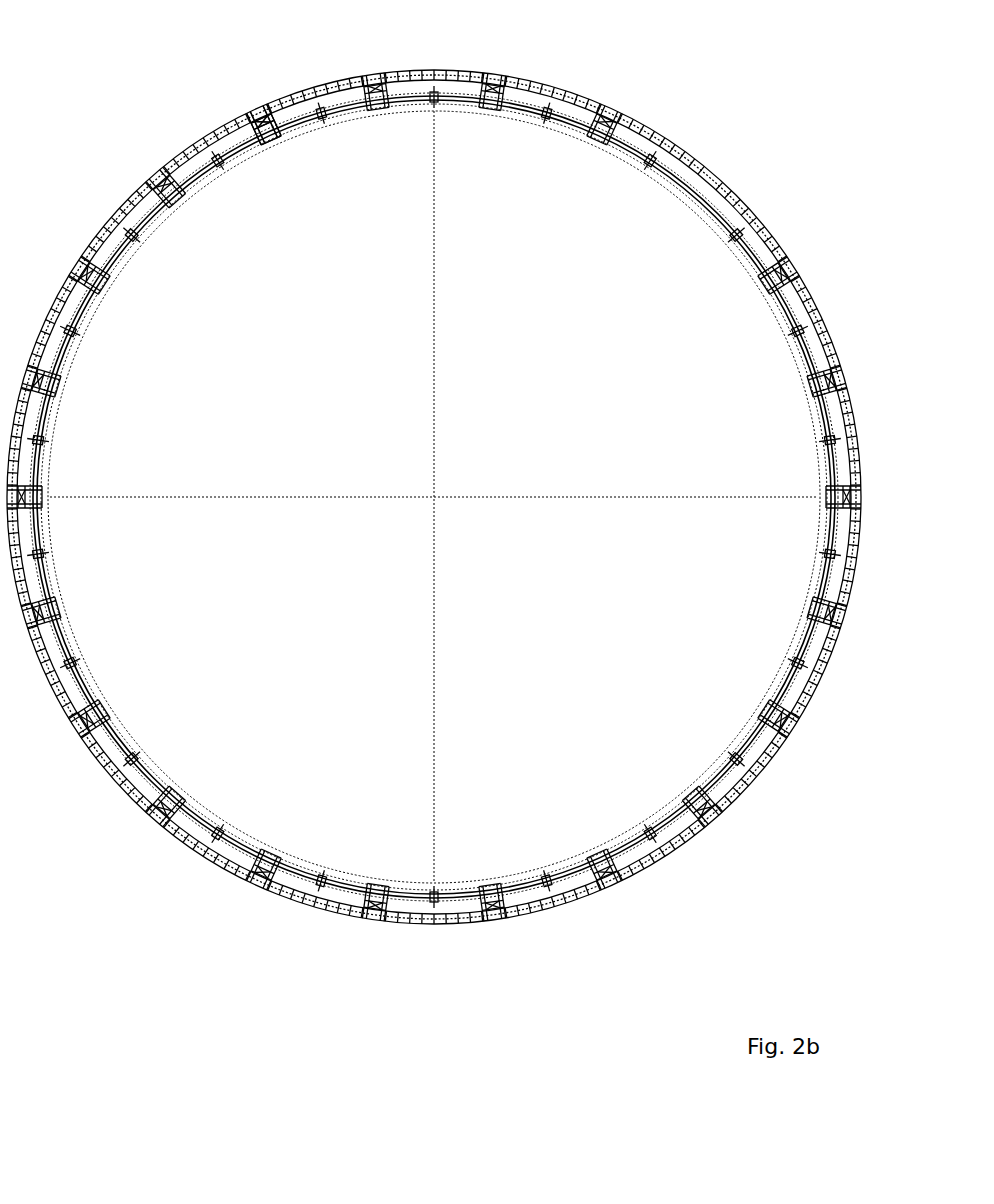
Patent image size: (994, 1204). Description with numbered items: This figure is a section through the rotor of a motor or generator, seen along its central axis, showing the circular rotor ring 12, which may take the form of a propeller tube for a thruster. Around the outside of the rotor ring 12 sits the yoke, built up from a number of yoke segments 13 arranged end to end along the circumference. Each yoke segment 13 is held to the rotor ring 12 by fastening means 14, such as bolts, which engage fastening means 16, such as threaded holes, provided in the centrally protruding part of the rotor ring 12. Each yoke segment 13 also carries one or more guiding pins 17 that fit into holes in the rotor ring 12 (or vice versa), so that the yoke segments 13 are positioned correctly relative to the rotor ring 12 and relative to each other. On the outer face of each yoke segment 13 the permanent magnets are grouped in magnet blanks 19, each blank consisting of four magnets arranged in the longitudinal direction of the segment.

The rotor ring 12 is at (667, 185).
The yoke segment 13 is at (583, 95).
The fastening means 14 is at (393, 82).
The fastening means 16 is at (354, 121).
The guiding pin 17 is at (545, 117).
The magnet blank 19 is at (189, 124).